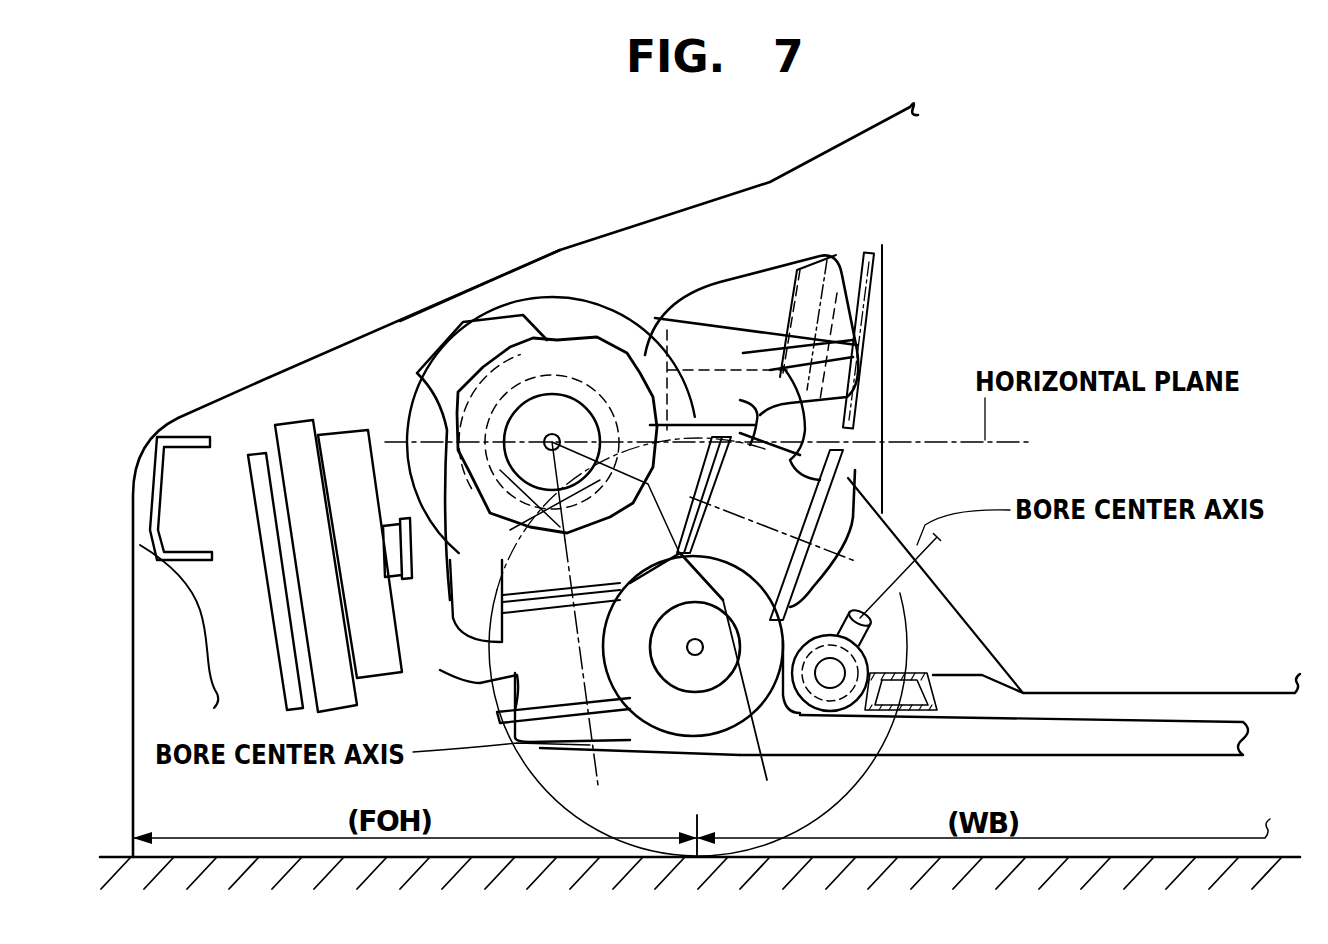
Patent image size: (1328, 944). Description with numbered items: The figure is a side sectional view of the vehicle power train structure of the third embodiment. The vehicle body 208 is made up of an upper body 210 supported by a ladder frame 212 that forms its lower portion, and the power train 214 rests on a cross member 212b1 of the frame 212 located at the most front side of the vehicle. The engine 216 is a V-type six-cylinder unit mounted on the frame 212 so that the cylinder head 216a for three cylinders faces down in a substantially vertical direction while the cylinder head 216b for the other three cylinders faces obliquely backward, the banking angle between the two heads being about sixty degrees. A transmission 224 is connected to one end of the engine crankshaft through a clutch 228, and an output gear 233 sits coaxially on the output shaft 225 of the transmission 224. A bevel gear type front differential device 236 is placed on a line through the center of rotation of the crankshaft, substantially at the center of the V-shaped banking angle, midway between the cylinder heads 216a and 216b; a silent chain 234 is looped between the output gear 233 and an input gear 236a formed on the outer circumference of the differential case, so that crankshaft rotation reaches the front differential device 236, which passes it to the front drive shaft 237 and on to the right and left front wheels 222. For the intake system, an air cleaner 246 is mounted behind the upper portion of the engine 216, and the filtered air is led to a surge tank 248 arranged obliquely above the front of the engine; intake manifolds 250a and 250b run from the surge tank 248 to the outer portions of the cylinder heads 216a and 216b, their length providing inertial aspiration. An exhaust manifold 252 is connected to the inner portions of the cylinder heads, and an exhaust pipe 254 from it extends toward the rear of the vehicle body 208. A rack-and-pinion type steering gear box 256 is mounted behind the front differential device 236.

The vehicle body 208 is at (774, 168).
The body 210 is at (593, 233).
The ladder frame 212 is at (962, 682).
The cross member 212b1 is at (923, 712).
The power train 214 is at (423, 346).
The engine 216 is at (778, 497).
The cylinder head 216a is at (550, 742).
The cylinder head 216b is at (840, 517).
The front wheels 222 is at (878, 773).
The transmission 224 is at (555, 356).
The output shaft 225 is at (647, 320).
The clutch 228 is at (412, 418).
The output gear 233 is at (528, 413).
The silent chain 234 is at (580, 562).
The front differential device 236 is at (670, 724).
The input gear 236a is at (785, 699).
The front drive shaft 237 is at (690, 737).
The air cleaner 246 is at (782, 270).
The surge tank 248 is at (465, 345).
The intake manifold 250a is at (443, 673).
The intake manifold 250b is at (672, 295).
The exhaust manifold 252 is at (745, 773).
The exhaust pipe 254 is at (1127, 748).
The steering gear box 256 is at (880, 652).